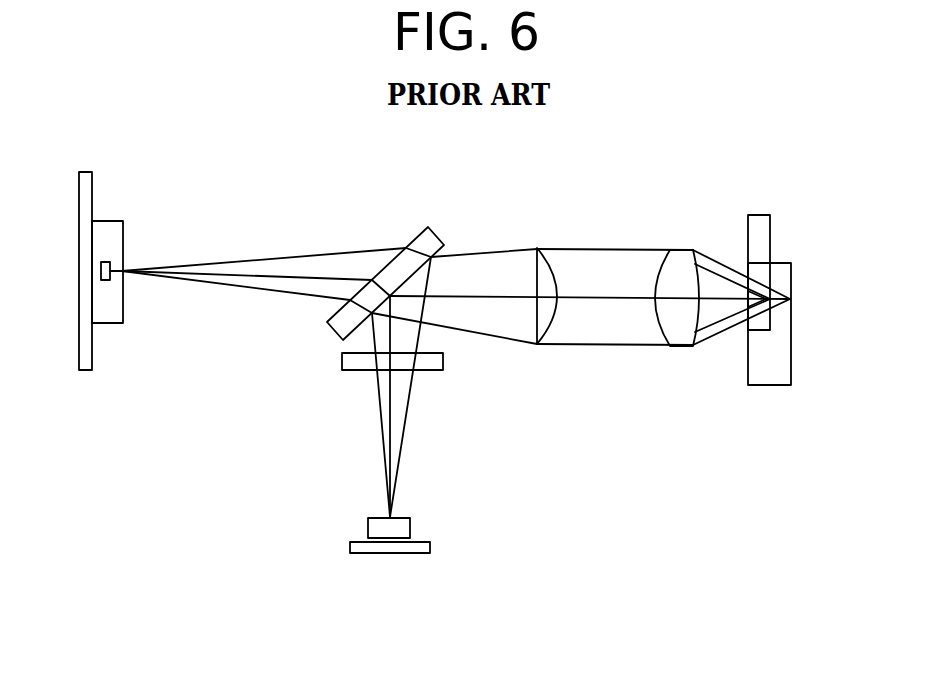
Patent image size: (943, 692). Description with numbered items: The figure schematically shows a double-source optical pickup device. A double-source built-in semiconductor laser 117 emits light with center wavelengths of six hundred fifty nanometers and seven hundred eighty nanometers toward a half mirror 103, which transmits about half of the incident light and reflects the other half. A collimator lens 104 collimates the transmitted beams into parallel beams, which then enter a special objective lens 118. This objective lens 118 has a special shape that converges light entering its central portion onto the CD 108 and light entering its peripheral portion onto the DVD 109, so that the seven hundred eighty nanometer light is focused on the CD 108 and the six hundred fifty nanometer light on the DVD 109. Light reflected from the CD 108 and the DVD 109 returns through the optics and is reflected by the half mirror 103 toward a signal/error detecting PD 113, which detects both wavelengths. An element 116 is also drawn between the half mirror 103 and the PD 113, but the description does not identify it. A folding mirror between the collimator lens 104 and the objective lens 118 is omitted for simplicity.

The half mirror 103 is at (417, 242).
The collimator lens 104 is at (543, 267).
The CD 108 is at (770, 385).
The DVD 109 is at (760, 228).
The signal/error detecting PD 113 is at (107, 238).
The detection lens / aperture plate 116 is at (444, 362).
The double-source built-in semiconductor laser 117 is at (410, 530).
The special objective lens 118 is at (657, 327).